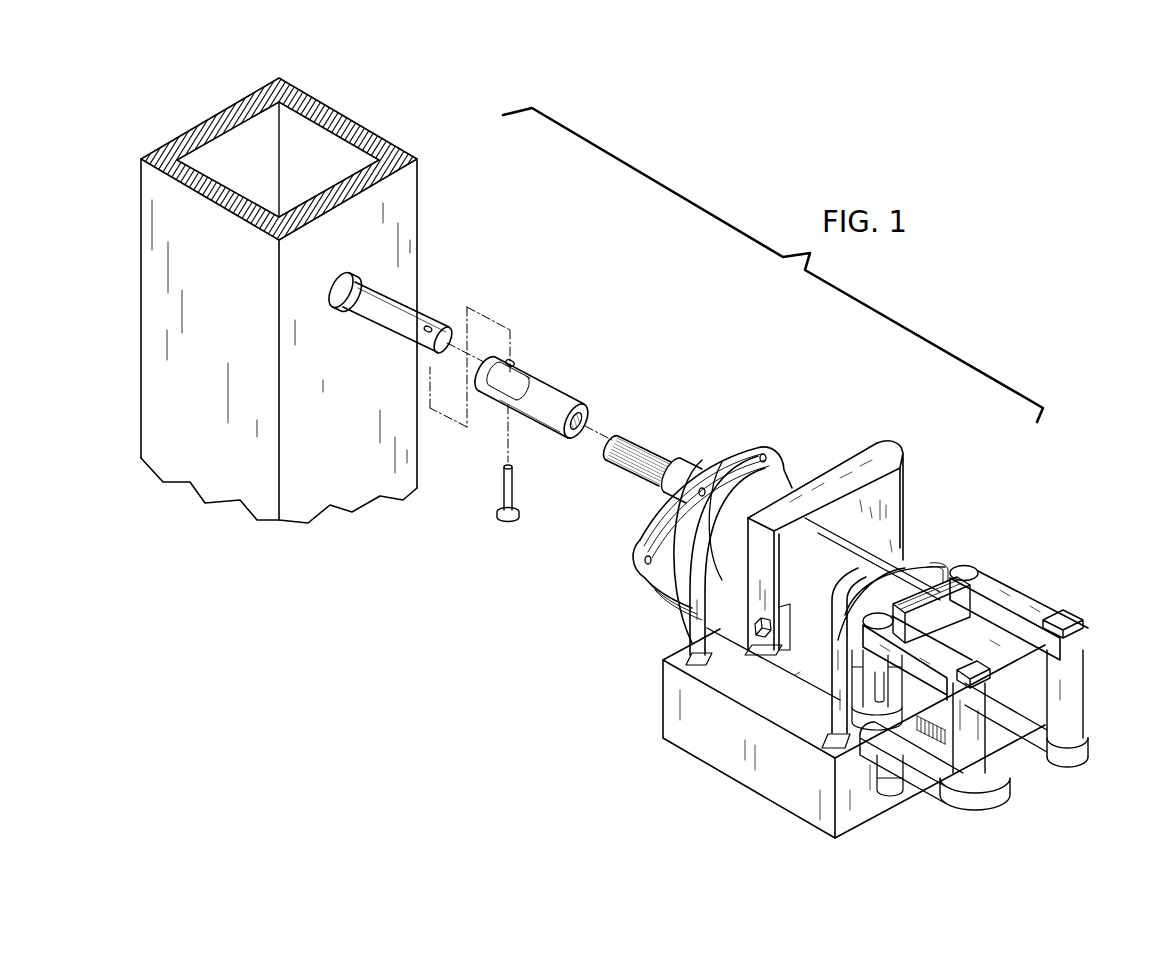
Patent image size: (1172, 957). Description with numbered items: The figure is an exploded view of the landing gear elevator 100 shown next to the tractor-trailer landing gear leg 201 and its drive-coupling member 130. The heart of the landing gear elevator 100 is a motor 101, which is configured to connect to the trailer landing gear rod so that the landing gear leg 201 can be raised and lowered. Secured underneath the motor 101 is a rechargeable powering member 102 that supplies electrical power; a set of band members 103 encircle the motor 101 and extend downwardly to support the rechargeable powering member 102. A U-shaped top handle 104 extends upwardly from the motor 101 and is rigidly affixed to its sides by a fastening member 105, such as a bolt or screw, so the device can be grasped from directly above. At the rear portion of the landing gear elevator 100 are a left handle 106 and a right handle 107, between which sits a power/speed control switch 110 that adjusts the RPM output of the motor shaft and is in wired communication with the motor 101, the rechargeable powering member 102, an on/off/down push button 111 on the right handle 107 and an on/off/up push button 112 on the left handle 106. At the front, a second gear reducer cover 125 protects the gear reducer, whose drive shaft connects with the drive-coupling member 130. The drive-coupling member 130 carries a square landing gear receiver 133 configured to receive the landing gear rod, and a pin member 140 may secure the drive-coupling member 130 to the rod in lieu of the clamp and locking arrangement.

The landing gear elevator 100 is at (1071, 490).
The motor 101 is at (857, 557).
The rechargeable powering member 102 is at (740, 772).
The band members 103 is at (692, 625).
The top handle 104 is at (833, 473).
The fastening member 105 is at (757, 633).
The left handle 106 is at (973, 760).
The right handle 107 is at (1078, 693).
The power/speed control switch 110 is at (943, 570).
The on/off/down push button 111 is at (1058, 613).
The on/off/up push button 112 is at (987, 670).
The second gear reducer cover 125 is at (653, 450).
The drive-coupling member 130 is at (555, 392).
The landing gear receiver 133 is at (512, 360).
The pin member 140 is at (505, 485).
The tractor-trailer landing gear leg 201 is at (387, 308).